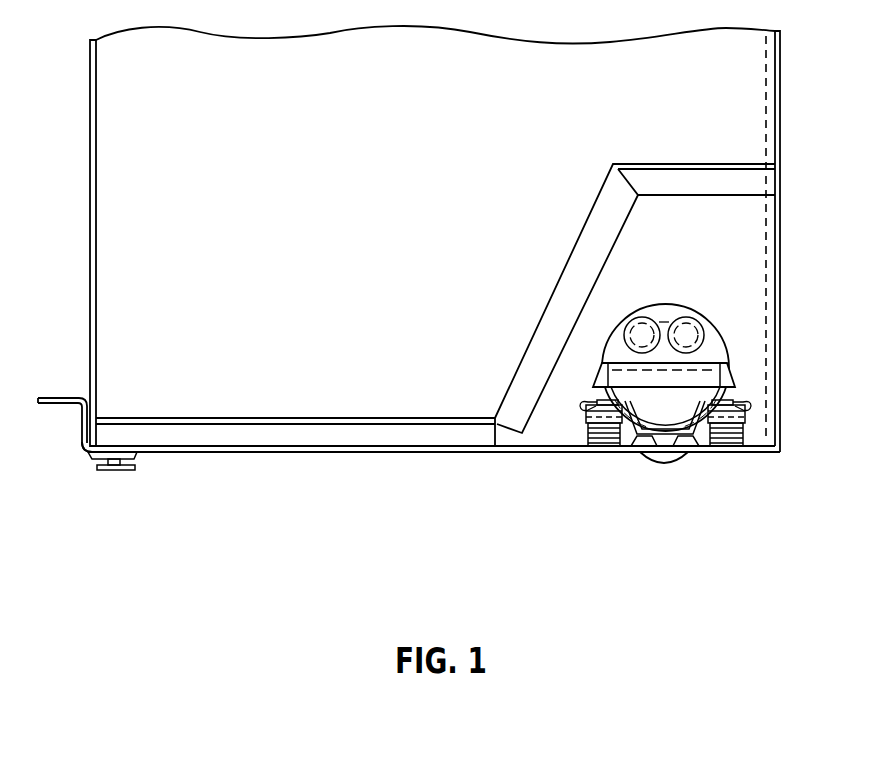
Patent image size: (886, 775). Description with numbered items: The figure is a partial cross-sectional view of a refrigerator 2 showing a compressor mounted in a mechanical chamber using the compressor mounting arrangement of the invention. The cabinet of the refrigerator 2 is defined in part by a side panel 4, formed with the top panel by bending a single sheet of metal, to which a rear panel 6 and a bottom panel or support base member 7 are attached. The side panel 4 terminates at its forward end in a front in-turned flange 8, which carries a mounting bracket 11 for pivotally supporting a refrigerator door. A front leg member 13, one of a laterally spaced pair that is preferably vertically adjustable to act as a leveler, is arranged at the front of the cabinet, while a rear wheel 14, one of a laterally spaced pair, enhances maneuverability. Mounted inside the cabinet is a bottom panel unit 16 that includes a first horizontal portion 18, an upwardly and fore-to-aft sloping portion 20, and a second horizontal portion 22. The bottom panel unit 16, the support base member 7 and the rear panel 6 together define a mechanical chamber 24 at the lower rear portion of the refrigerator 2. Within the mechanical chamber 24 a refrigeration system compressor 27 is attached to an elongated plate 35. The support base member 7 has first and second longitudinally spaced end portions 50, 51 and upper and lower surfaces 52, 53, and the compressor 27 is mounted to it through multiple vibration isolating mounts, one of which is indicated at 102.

The refrigerator 2 is at (76, 118).
The side panel 4 is at (291, 162).
The rear panel 6 is at (781, 134).
The support base member 7 is at (540, 452).
The front in-turned flange 8 is at (90, 216).
The mounting bracket 11 is at (57, 397).
The front leg member 13 is at (115, 471).
The rear wheel 14 is at (664, 465).
The bottom panel unit 16 is at (620, 272).
The first horizontal portion 18 is at (278, 418).
The sloping portion 20 is at (572, 249).
The second horizontal portion 22 is at (667, 163).
The mechanical chamber 24 is at (731, 243).
The compressor 27 is at (703, 342).
The elongated plate 35 is at (718, 378).
The first end portion 50 is at (86, 448).
The second end portion 51 is at (776, 449).
The upper surface 52 is at (374, 440).
The lower surface 53 is at (270, 460).
The vibration isolating mount 102 is at (758, 420).